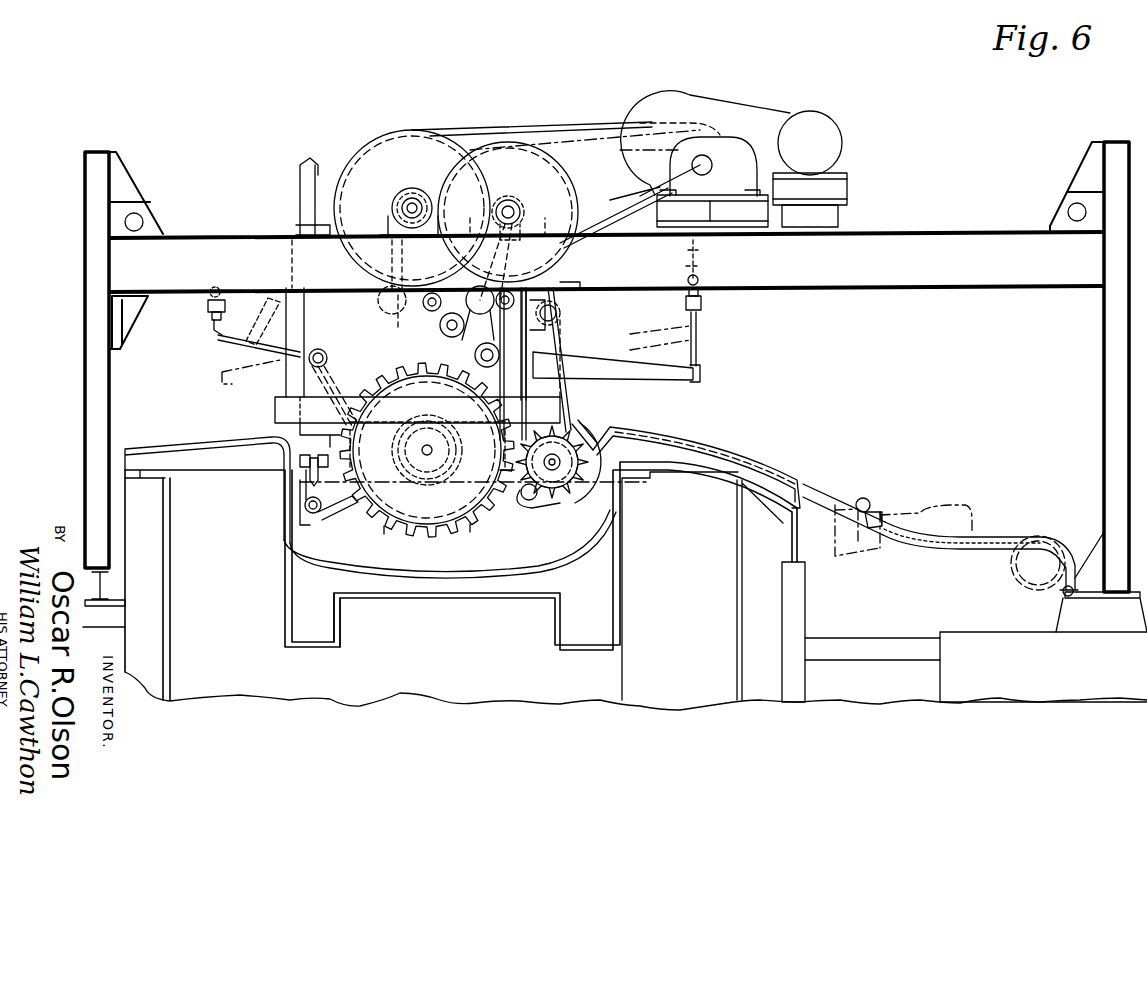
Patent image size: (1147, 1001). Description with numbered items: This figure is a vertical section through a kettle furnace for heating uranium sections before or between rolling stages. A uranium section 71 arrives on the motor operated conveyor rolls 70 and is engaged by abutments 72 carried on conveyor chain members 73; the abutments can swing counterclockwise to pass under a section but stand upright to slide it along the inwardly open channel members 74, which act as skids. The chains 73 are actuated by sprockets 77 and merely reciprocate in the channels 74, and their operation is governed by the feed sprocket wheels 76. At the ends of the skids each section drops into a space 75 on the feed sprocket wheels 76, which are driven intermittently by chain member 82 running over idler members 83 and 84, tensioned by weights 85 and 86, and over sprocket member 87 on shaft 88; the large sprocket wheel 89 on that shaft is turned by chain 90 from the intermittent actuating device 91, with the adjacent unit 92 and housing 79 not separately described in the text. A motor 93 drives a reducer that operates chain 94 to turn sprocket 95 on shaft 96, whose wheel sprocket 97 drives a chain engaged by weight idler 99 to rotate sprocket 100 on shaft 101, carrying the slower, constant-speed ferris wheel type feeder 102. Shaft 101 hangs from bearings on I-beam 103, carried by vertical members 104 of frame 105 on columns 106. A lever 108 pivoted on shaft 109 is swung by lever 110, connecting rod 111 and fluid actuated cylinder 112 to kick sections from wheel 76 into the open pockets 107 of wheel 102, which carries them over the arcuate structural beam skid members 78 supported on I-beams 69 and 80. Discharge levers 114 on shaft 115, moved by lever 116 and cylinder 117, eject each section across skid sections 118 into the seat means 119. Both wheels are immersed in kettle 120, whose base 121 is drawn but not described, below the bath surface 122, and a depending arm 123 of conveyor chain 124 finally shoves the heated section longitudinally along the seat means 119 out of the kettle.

The I-beam 69 is at (790, 538).
The motor operated conveyor rolls 70 is at (882, 508).
The uranium section 71 is at (540, 500).
The abutments 72 is at (875, 512).
The conveyor chain members 73 is at (910, 548).
The inwardly open channel members 74 is at (820, 498).
The spaces 75 is at (614, 426).
The feed sprocket wheels 76 is at (584, 420).
The sprockets 77 is at (1018, 578).
The structural beam skid members 78 is at (615, 508).
The pinion housing 79 is at (594, 492).
The I-beam 80 is at (125, 468).
The chain member 82 is at (562, 360).
The idler member 83 is at (540, 344).
The idler member 84 is at (560, 316).
The weight 85 is at (580, 284).
The weight 86 is at (482, 322).
The sprocket member 87 is at (512, 202).
The shaft 88 is at (516, 214).
The large sprocket wheel 89 is at (520, 145).
The chain 90 is at (600, 140).
The intermittent actuating device 91 is at (735, 137).
The motor 92 is at (836, 120).
The motor 93 is at (778, 114).
The chain 94 is at (562, 122).
The sprocket 95 is at (360, 142).
The shaft 96 is at (418, 200).
The wheel sprocket 97 is at (404, 188).
The weight idler 99 is at (440, 330).
The sprocket 100 is at (428, 420).
The shaft 101 is at (432, 452).
The ferris wheel type feeder 102 is at (494, 500).
The I-beam 103 is at (275, 408).
The vertical members 104 is at (305, 300).
The frame 105 is at (205, 236).
The columns 106 is at (84, 258).
The open pockets 107 is at (440, 530).
The lever 108 is at (502, 442).
The shaft 109 is at (475, 355).
The lever 110 is at (660, 380).
The connecting rod 111 is at (698, 345).
The fluid actuated cylinder 112 is at (702, 300).
The discharge levers 114 is at (340, 380).
The shaft 115 is at (325, 352).
The lever 116 is at (232, 350).
The cylinder 117 is at (210, 304).
The skid sections 118 is at (340, 508).
The seat means 119 is at (304, 528).
The kettle 120 is at (560, 598).
The base 121 is at (737, 628).
The bath surface 122 is at (400, 522).
The depending arm 123 is at (312, 487).
The conveyor chain 124 is at (300, 462).